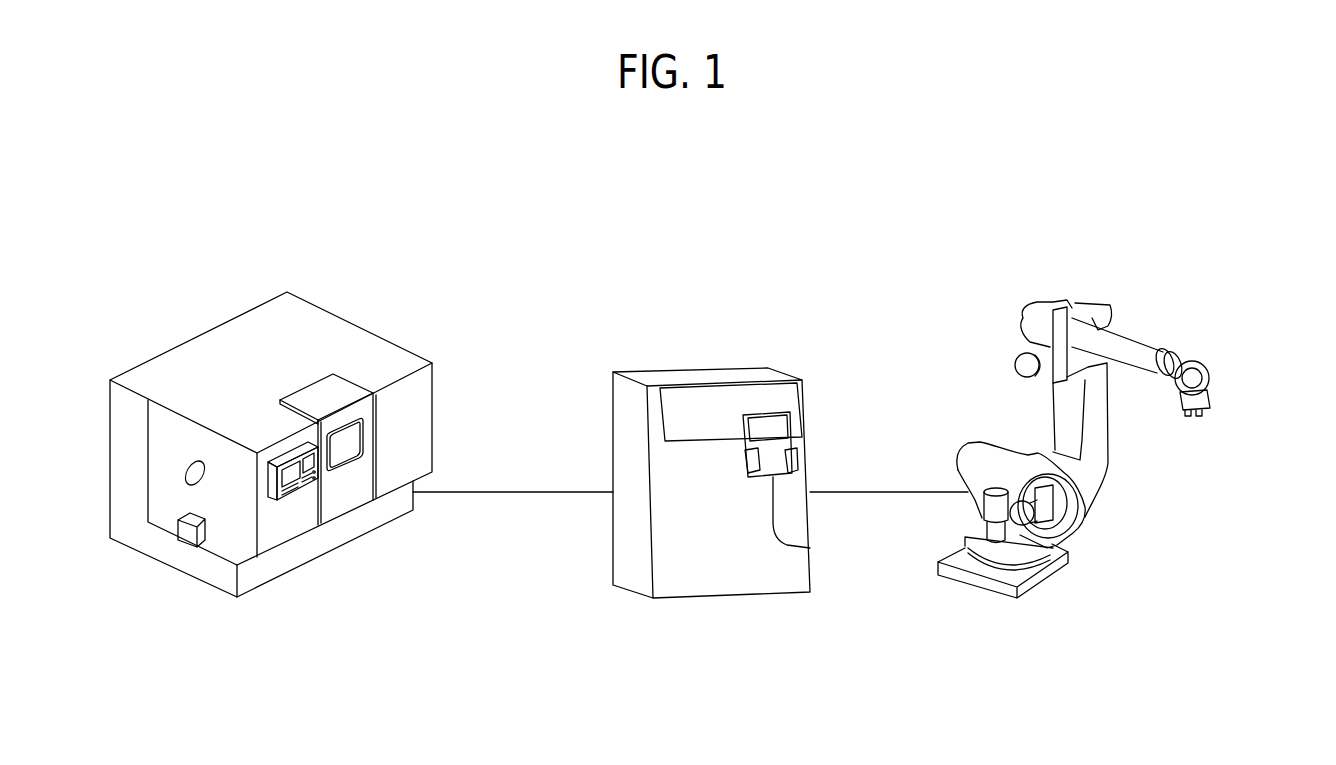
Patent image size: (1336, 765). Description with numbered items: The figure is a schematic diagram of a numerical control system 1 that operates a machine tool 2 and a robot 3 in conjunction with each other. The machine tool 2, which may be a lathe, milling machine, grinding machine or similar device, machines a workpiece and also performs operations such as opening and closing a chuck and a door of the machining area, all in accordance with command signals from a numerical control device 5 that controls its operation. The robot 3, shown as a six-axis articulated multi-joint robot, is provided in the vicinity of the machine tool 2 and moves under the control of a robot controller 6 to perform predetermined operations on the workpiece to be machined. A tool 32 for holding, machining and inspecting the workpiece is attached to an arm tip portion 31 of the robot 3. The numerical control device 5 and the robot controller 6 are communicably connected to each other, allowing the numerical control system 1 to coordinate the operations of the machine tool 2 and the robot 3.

The numerical control system 1 is at (1031, 184).
The machine tool 2 is at (363, 350).
The robot 3 is at (1098, 308).
The numerical control device 5 is at (296, 500).
The robot controller 6 is at (762, 372).
The arm tip portion 31 is at (1205, 408).
The tool 32 is at (1200, 415).